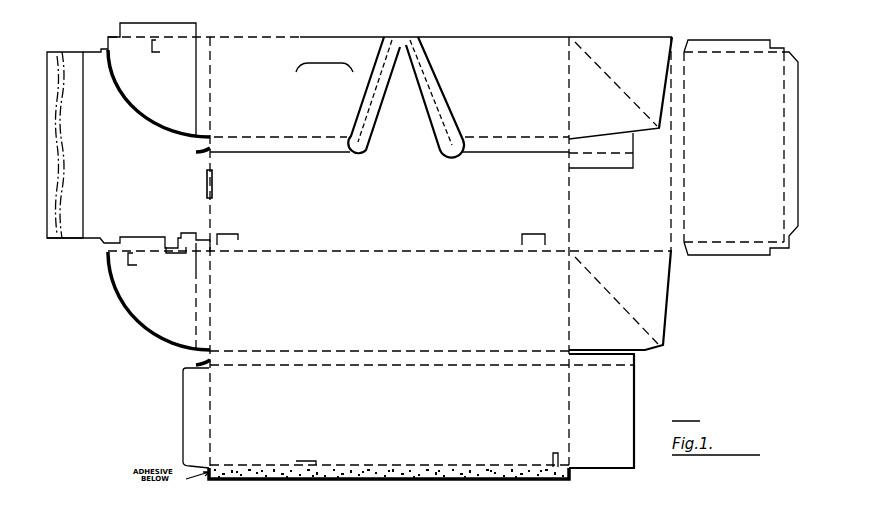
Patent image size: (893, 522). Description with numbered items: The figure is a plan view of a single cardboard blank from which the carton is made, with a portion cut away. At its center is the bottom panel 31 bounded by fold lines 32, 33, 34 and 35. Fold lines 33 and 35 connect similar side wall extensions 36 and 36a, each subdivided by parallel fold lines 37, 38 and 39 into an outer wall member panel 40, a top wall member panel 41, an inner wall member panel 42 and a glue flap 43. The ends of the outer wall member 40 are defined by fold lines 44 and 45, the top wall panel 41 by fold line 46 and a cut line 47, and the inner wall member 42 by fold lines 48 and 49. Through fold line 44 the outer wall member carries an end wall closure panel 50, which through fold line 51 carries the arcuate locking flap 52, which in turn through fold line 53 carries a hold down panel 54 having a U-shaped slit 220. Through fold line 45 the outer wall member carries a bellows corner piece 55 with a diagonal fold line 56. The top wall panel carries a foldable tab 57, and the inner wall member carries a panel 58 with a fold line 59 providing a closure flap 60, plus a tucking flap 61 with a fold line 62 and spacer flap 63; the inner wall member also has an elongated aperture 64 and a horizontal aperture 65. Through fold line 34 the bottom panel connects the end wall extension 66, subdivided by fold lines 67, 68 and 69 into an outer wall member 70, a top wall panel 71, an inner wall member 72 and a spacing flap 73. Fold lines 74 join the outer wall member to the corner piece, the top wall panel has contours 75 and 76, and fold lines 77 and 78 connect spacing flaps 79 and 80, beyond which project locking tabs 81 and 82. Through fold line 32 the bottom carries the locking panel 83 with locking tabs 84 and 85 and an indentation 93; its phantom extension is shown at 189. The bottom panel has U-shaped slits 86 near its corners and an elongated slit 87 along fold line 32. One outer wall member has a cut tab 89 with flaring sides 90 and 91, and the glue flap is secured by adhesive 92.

The bottom panel 31 is at (392, 200).
The score or fold line 32 is at (212, 203).
The score or fold line 33 is at (406, 37).
The score or fold line 34 is at (567, 197).
The score or fold line 35 is at (400, 250).
The extension 36 is at (686, 372).
The extension 36a is at (594, 28).
The score or fold line 37 is at (500, 142).
The score or fold line 38 is at (465, 367).
The score or fold line 39 is at (420, 56).
The outer wall member panel 40 is at (487, 48).
The top wall member panel 41 is at (472, 150).
The inner wall member panel 42 is at (430, 137).
The glue flap 43 is at (418, 45).
The score or fold line 44 is at (210, 100).
The score or fold line 45 is at (567, 90).
The score or fold line 46 is at (210, 137).
The cut line 47 is at (567, 143).
The score or fold line 48 is at (210, 417).
The score or fold line 49 is at (569, 418).
The side wall end wall closure panel 50 is at (210, 50).
The score or fold line 51 is at (196, 300).
The locking flap 52 is at (160, 110).
The score or fold line 53 is at (152, 156).
The panel 54 is at (196, 26).
The corner piece 55 is at (625, 48).
The score or fold line 56 is at (616, 92).
The foldable tab 57 is at (196, 86).
The panel 58 is at (210, 380).
The score or fold line 59 is at (209, 398).
The closure flap 60 is at (200, 148).
The tucking flap 61 is at (591, 152).
The score or fold line 62 is at (612, 135).
The spacer flap 63 is at (600, 166).
The elongated aperture 64 is at (553, 458).
The elongated horizontal aperture 65 is at (308, 461).
The extension 66 is at (771, 321).
The fold or score line 67 is at (672, 200).
The fold or score line 68 is at (686, 194).
The fold or score line 69 is at (785, 200).
The end or back wall outer wall member 70 is at (568, 230).
The top wall panel 71 is at (680, 227).
The end wall inner wall member 72 is at (686, 173).
The spacing flap 73 is at (790, 245).
The score or fold lines 74 is at (623, 250).
The contour 75 is at (685, 40).
The contour 76 is at (682, 257).
The score or fold line 77 is at (721, 57).
The score or fold line 78 is at (749, 242).
The spacing flap 79 is at (762, 40).
The spacing flap 80 is at (726, 257).
The locking tab 81 is at (786, 50).
The locking tab 82 is at (775, 253).
The locking panel 83 is at (193, 163).
The locking tab 84 is at (108, 44).
The locking tab 85 is at (104, 243).
The U-shaped slit 86 is at (238, 234).
The elongated aperture or slit 87 is at (213, 187).
The tab 89 is at (320, 70).
The flaring side 90 is at (303, 68).
The flaring side 91 is at (350, 72).
The adhesive 92 is at (398, 478).
The indentation 93 is at (200, 224).
The extended locking flange 189 is at (48, 238).
The U-shaped slit 220 is at (170, 237).